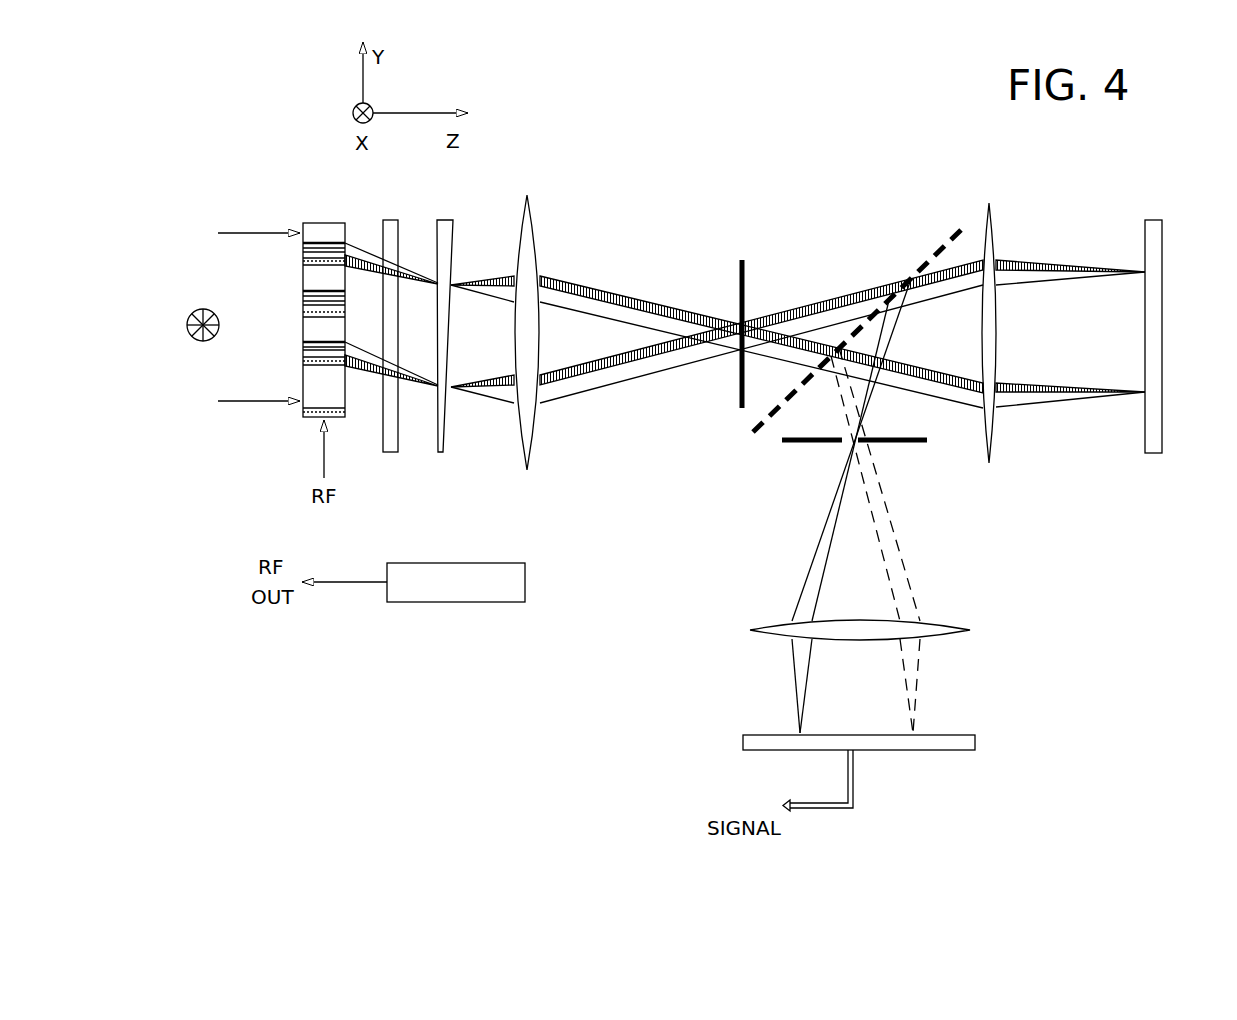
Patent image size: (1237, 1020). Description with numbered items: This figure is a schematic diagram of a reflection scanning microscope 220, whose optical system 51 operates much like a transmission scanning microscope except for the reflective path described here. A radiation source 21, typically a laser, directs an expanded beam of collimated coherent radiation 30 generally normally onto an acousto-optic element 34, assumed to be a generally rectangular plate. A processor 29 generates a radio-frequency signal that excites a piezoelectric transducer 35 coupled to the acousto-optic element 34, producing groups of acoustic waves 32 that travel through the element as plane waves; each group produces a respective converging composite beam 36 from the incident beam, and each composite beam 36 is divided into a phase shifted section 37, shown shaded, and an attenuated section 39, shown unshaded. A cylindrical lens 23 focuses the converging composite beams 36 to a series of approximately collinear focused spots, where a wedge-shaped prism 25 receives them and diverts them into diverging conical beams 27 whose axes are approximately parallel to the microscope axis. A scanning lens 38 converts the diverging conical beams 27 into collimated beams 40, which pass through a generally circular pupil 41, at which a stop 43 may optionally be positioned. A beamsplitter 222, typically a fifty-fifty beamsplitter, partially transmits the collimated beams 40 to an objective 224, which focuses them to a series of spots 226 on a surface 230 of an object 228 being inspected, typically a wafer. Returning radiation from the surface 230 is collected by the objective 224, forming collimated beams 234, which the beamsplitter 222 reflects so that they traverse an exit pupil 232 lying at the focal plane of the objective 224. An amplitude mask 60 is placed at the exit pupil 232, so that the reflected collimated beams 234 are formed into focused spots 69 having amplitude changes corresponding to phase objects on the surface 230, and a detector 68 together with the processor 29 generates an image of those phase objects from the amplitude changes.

The radiation source 21 is at (203, 342).
The cylindrical lens 23 is at (392, 452).
The wedge-shaped prism 25 is at (440, 447).
The diverging conical beams 27 is at (497, 276).
The processor 29 is at (423, 602).
The expanded beam of collimated coherent radiation 30 is at (265, 195).
The groups of acoustic waves 32 is at (303, 250).
The acousto-optic element 34 is at (330, 223).
The piezoelectric transducer 35 is at (305, 420).
The converging composite beam 36 is at (366, 260).
The phase shifted section 37 is at (558, 277).
The scanning lens 38 is at (530, 197).
The attenuated section 39 is at (573, 388).
The collimated beams 40 is at (597, 288).
The pupil 41 is at (760, 270).
The stop 43 is at (737, 381).
The optical system 51 is at (635, 183).
The amplitude mask 60 is at (867, 468).
The detector 68 is at (900, 752).
The focused spots 69 is at (800, 730).
The reflection scanning microscope 220 is at (265, 655).
The beamsplitter 222 is at (925, 265).
The objective 224 is at (996, 212).
The spots 226 is at (1140, 275).
The object 228 is at (1165, 220).
The surface 230 is at (1140, 240).
The exit pupil 232 is at (823, 460).
The collimated beams 234 is at (935, 556).